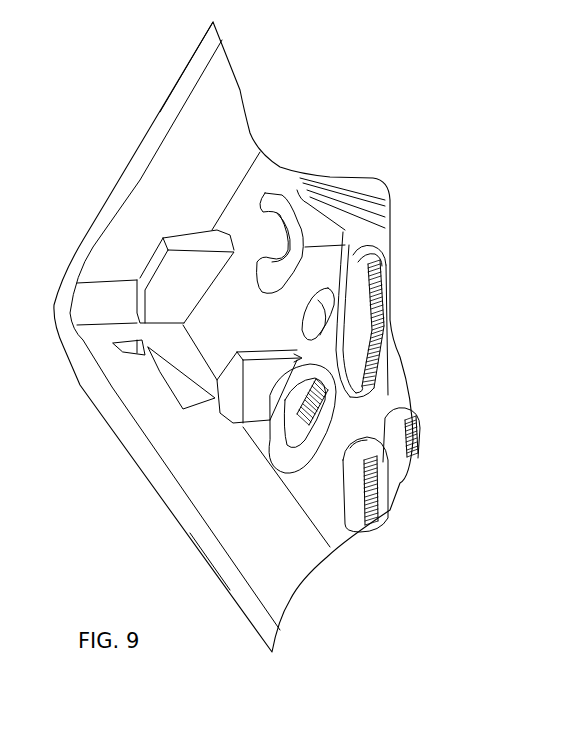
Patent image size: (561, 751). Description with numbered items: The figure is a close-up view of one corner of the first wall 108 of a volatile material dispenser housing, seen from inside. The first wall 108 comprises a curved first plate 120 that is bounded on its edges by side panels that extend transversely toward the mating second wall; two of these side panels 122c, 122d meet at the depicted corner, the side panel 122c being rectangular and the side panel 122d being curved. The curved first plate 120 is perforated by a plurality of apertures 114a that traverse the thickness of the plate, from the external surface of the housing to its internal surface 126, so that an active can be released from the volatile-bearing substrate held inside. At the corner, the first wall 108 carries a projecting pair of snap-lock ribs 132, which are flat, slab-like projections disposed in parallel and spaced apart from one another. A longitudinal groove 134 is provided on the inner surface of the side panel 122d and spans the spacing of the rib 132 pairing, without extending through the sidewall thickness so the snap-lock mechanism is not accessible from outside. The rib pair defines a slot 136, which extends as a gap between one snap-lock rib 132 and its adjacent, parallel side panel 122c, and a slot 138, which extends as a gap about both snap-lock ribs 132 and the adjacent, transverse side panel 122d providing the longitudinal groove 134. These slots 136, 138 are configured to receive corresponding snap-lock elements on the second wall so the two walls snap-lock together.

The first wall 108 is at (462, 580).
The apertures 114a is at (373, 480).
The curved first plate 120 is at (290, 173).
The side panel 122c is at (200, 64).
The side panel 122d is at (200, 542).
The internal surface 126 is at (272, 173).
The snap-lock ribs 132 is at (165, 262).
The longitudinal groove 134 is at (163, 382).
The slot 136 is at (186, 226).
The slot 138 is at (244, 432).